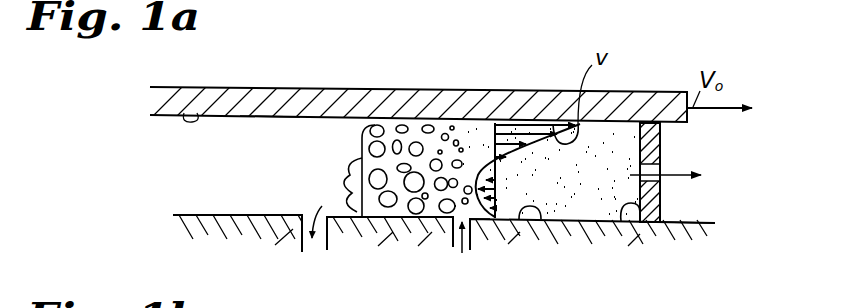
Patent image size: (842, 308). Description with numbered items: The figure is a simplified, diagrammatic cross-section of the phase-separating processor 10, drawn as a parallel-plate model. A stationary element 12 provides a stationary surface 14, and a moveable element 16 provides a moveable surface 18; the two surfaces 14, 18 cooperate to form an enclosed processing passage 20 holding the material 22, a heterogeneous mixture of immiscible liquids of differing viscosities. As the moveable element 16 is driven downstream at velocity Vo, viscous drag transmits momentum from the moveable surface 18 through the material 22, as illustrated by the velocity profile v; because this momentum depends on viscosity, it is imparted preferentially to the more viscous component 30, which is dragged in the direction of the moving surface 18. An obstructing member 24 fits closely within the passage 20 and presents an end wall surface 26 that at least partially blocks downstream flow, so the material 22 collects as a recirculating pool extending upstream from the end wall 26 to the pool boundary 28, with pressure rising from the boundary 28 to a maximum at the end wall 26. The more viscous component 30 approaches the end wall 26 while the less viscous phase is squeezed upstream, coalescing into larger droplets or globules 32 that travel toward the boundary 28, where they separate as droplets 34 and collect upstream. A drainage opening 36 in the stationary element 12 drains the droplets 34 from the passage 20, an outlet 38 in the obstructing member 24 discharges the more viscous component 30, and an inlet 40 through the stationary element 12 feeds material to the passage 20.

The processor 10 is at (672, 61).
The stationary element 12 is at (580, 232).
The stationary surface 14 is at (489, 241).
The moveable element 16 is at (232, 97).
The moveable surface 18 is at (188, 116).
The processing chamber or passage 20 is at (243, 138).
The material 22 is at (477, 140).
The obstructing member 24 is at (663, 133).
The end wall surface 26 is at (687, 241).
The pool boundary 28 is at (362, 140).
The more viscous component 30 is at (613, 168).
The droplets or globules 32 is at (390, 242).
The droplets or globules of less viscous component 34 is at (354, 178).
The drainage opening 36 is at (300, 224).
The outlet 38 is at (663, 162).
The inlet 40 is at (453, 242).